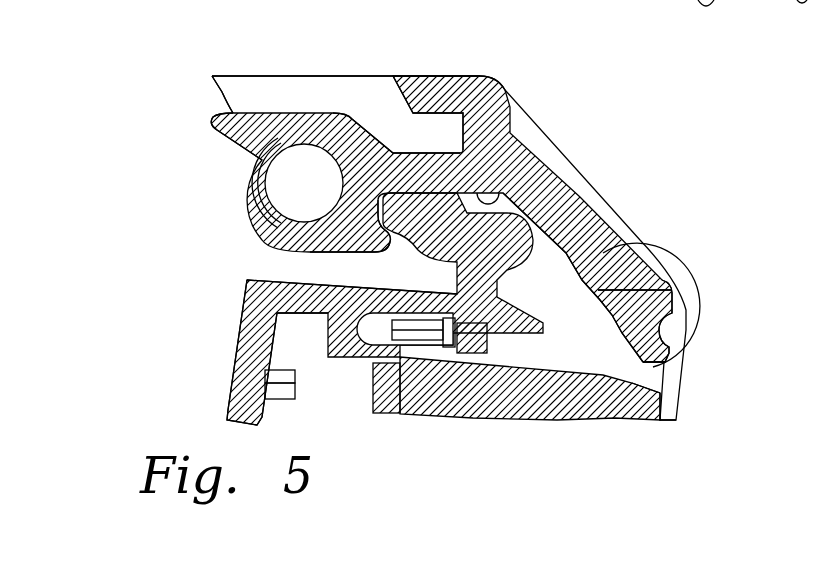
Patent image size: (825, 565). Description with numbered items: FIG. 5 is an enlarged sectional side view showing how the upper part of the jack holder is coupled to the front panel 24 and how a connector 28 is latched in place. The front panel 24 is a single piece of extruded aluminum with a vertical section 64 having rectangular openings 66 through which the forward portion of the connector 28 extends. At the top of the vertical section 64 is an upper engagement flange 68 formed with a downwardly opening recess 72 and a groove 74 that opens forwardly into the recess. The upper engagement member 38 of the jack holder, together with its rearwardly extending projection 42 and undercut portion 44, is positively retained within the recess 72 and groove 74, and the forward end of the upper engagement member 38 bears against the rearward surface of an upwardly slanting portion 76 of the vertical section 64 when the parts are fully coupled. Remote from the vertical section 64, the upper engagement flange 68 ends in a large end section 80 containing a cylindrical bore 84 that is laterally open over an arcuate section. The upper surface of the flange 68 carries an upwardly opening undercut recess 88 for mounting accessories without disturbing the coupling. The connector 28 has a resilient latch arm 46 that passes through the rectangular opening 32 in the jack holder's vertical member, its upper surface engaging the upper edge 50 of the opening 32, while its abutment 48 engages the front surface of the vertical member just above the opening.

The front panel 24 is at (597, 183).
The connector 28 is at (683, 410).
The opening 32 is at (495, 370).
The upper engagement member 38 is at (548, 235).
The rearwardly extending projection 42 is at (433, 240).
The undercut portion 44 is at (335, 265).
The resilient latch arm 46 is at (373, 363).
The abutment 48 is at (520, 295).
The upper edge 50 is at (497, 345).
The vertical section 64 is at (670, 357).
The opening 66 is at (663, 385).
The upper engagement flange 68 is at (398, 180).
The downwardly opening recess 72 is at (518, 170).
The groove 74 is at (325, 140).
The upwardly slanting portion 76 is at (655, 262).
The end section 80 is at (245, 133).
The cylindrical bore 84 is at (257, 192).
The undercut recess 88 is at (440, 135).